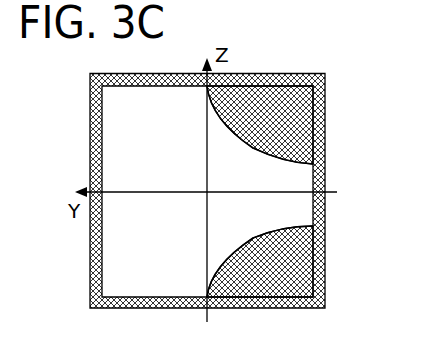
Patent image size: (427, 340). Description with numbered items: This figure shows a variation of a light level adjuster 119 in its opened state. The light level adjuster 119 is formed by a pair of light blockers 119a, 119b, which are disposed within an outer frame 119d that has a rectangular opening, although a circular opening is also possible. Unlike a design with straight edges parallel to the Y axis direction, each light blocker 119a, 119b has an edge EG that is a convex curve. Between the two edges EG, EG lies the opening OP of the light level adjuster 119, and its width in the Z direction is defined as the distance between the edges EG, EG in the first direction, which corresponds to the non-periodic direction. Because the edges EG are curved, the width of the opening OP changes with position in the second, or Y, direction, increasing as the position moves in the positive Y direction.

The light level adjuster 119 is at (338, 90).
The light blocker 119a is at (266, 288).
The light blocker 119b is at (237, 93).
The outer frame 119d is at (325, 148).
The opening OP is at (300, 217).
The edge EG is at (235, 146).